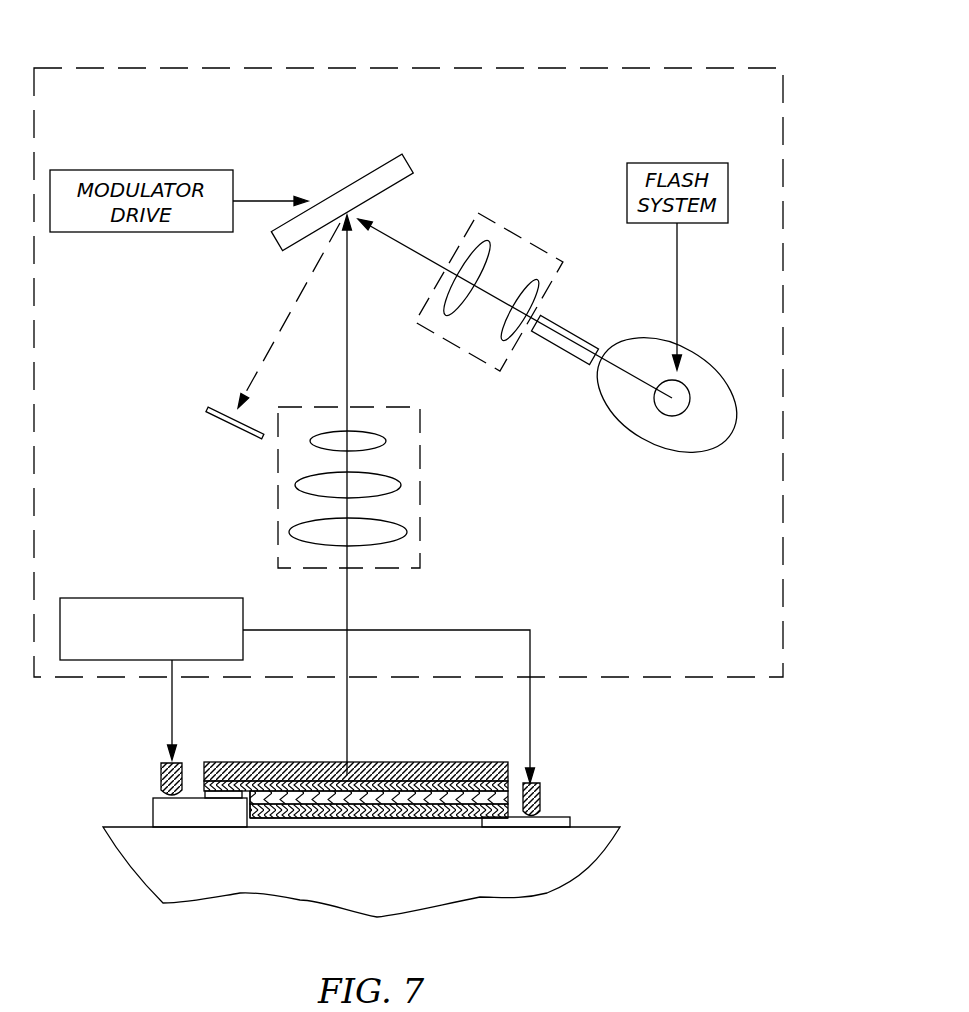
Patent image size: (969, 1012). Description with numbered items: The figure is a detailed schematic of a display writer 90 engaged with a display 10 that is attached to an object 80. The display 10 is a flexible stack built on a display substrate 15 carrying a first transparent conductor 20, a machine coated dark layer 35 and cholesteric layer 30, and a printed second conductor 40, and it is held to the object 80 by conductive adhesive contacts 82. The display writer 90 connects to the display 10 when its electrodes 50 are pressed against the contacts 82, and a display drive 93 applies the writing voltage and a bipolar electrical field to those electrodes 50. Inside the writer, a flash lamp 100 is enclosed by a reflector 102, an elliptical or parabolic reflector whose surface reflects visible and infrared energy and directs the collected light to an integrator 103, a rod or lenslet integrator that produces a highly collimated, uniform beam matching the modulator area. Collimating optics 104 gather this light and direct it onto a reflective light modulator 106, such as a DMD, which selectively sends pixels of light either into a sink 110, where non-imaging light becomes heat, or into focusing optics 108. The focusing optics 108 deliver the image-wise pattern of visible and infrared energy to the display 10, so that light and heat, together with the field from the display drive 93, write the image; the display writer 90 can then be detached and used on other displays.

The display writer 90 is at (403, 68).
The display drive 93 is at (150, 598).
The reflective light modulator 106 is at (403, 160).
The sink 110 is at (207, 420).
The focusing optics 108 is at (278, 510).
The collimating optics 104 is at (520, 240).
The integrator 103 is at (573, 323).
The reflector 102 is at (655, 440).
The flash lamp 100 is at (655, 397).
The object 80 is at (175, 870).
The conductive adhesive contacts 82 is at (150, 813).
The electrodes 50 is at (160, 768).
The first transparent conductor 20 is at (280, 765).
The display substrate 15 is at (222, 765).
The cholesteric layer 30 is at (450, 804).
The dark layer 35 is at (395, 818).
The second conductor 40 is at (357, 818).
The display 10 is at (308, 838).